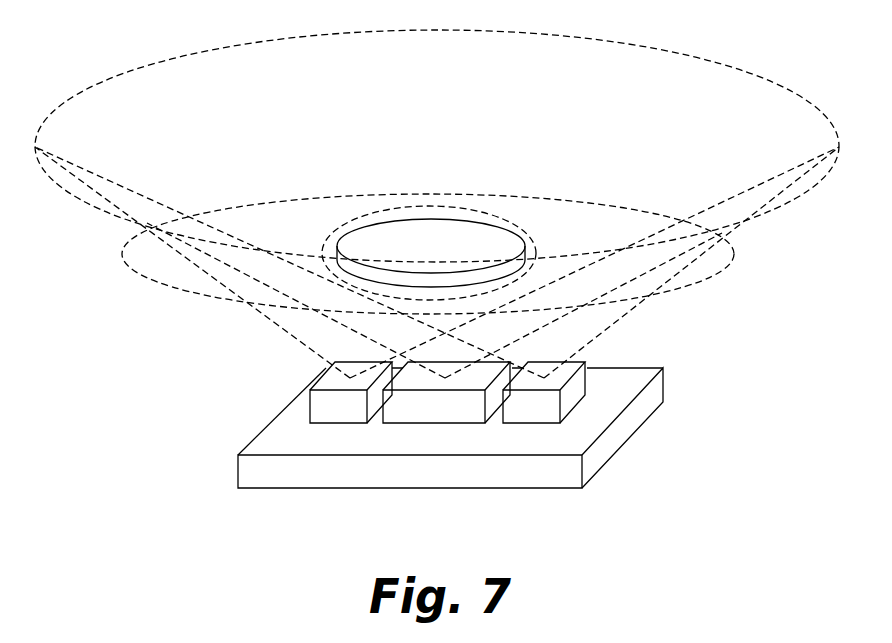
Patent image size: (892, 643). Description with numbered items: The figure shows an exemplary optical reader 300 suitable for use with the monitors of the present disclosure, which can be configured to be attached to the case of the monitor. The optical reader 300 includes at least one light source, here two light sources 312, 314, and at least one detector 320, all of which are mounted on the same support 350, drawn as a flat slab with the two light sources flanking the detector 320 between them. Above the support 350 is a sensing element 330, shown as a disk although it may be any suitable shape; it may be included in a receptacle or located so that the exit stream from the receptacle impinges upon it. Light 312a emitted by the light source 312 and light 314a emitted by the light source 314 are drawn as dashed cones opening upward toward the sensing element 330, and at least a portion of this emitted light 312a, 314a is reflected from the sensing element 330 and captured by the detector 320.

The optical reader 300 is at (457, 454).
The light source 312 is at (338, 410).
The light emitted by light source 312a is at (262, 336).
The light source 314 is at (537, 412).
The light emitted by light source 314a is at (655, 311).
The detector 320 is at (435, 410).
The sensing element 330 is at (432, 227).
The support 350 is at (245, 472).